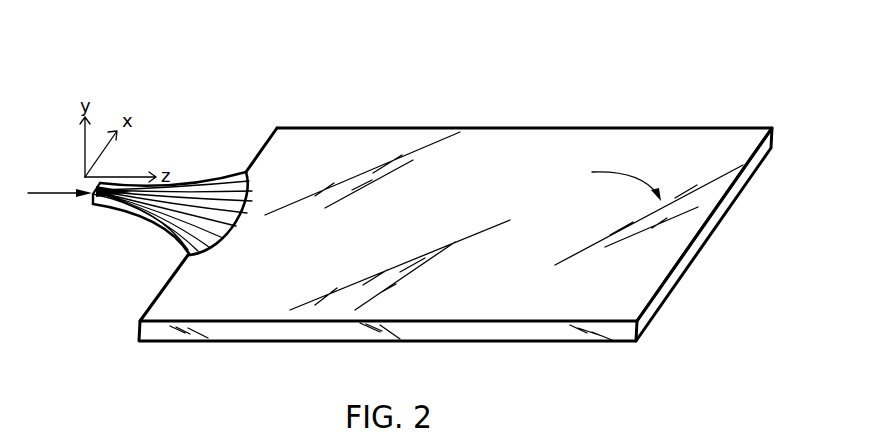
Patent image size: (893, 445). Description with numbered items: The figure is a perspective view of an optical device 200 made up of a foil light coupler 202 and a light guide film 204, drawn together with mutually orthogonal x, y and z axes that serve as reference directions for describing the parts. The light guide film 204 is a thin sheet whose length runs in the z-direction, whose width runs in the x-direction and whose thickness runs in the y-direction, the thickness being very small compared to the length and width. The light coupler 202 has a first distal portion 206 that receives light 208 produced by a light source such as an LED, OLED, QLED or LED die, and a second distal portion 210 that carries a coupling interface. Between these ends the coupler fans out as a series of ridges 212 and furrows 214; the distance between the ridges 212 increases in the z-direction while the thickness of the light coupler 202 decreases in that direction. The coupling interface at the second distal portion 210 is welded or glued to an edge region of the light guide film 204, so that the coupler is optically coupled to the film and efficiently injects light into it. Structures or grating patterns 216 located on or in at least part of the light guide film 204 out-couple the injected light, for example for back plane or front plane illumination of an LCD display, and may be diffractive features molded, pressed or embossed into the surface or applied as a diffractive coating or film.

The optical device 200 is at (400, 181).
The light coupler 202 is at (197, 198).
The light guide film 204 is at (470, 198).
The first distal portion 206 is at (92, 202).
The light 208 is at (50, 193).
The second distal portion 210 is at (240, 233).
The ridges 212 is at (190, 193).
The furrows 214 is at (240, 194).
The grating patterns 216 is at (605, 183).